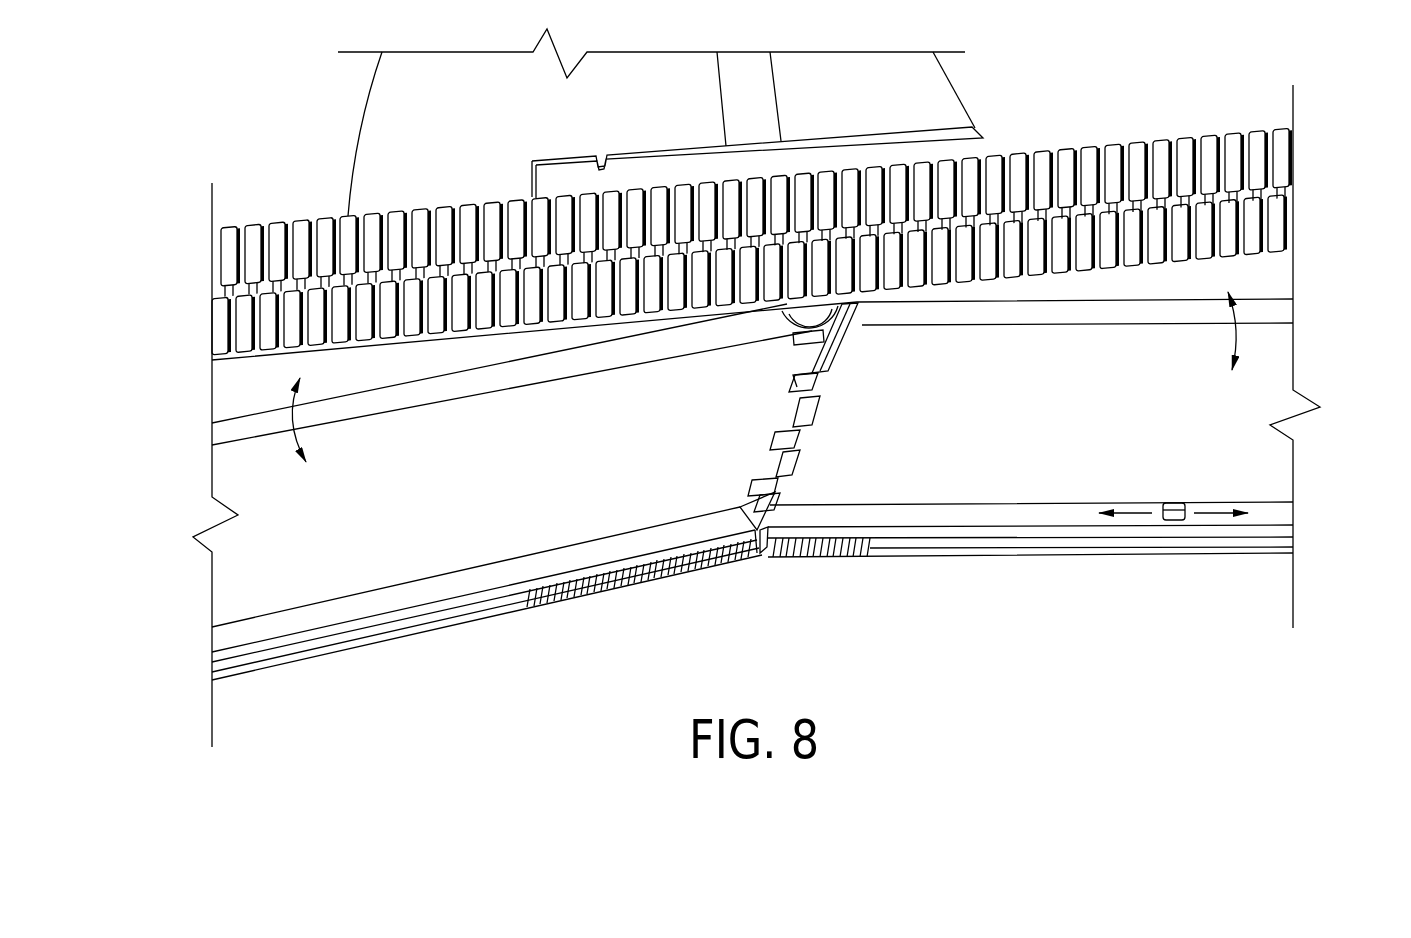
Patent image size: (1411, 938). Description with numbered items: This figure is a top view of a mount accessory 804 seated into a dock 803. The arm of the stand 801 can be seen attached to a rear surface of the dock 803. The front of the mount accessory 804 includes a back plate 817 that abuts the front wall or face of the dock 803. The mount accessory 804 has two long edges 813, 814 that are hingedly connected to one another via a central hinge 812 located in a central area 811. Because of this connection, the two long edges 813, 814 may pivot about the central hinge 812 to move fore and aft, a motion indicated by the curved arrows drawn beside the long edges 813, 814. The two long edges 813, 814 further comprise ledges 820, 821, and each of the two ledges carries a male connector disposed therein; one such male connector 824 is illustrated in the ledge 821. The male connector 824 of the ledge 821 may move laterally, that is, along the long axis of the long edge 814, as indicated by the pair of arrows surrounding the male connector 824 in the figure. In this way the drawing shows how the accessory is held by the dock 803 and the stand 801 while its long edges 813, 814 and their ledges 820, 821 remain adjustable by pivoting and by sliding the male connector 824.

The stand 801 is at (688, 132).
The dock 803 is at (320, 238).
The mount accessory 804 is at (270, 313).
The central area 811 is at (849, 345).
The central hinge 812 is at (773, 483).
The long edge 813 is at (232, 430).
The long edge 814 is at (1263, 313).
The back plate 817 is at (1235, 237).
The ledge 820 is at (430, 626).
The ledge 821 is at (1005, 545).
The male connector 824 is at (1175, 522).